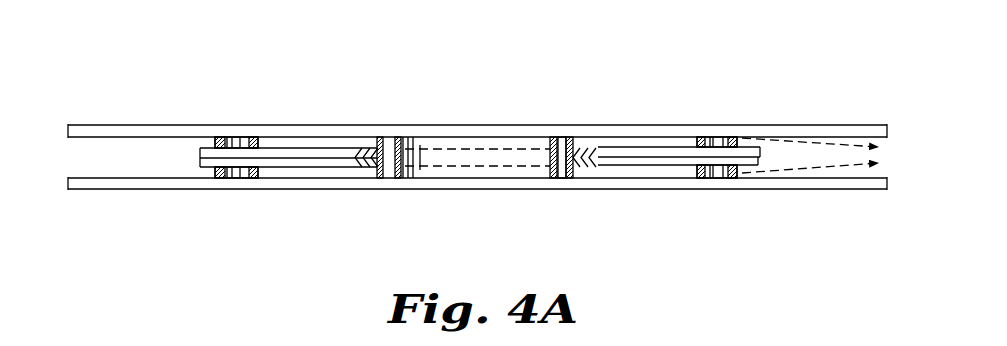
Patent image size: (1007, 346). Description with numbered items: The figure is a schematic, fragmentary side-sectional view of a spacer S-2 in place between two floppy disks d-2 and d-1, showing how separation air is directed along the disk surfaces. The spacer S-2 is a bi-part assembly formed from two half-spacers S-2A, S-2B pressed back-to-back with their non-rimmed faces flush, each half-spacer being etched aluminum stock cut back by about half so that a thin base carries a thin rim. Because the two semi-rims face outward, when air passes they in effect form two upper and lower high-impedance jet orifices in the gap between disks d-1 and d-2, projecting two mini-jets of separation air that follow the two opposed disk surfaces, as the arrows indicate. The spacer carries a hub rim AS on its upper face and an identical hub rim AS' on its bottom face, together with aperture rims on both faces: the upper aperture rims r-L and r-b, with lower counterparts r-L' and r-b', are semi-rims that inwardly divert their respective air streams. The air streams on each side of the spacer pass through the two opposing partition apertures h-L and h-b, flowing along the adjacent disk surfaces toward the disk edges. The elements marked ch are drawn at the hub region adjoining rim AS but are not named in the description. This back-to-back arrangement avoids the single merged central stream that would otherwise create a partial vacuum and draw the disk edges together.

The floppy disk d-2 is at (79, 125).
The floppy disk d-1 is at (80, 190).
The spacer S-2 is at (194, 157).
The partition aperture h-L is at (237, 137).
The aperture rim r-L is at (215, 111).
The lower aperture rim r-L' is at (221, 201).
The hub rim AS is at (486, 131).
The hub rim AS' is at (483, 183).
The clamping ring ch is at (562, 130).
The half-spacer S-2A is at (636, 145).
The half-spacer S-2B is at (638, 163).
The partition aperture h-b is at (713, 137).
The aperture rim r-b is at (747, 113).
The lower aperture rim r-b' is at (749, 197).